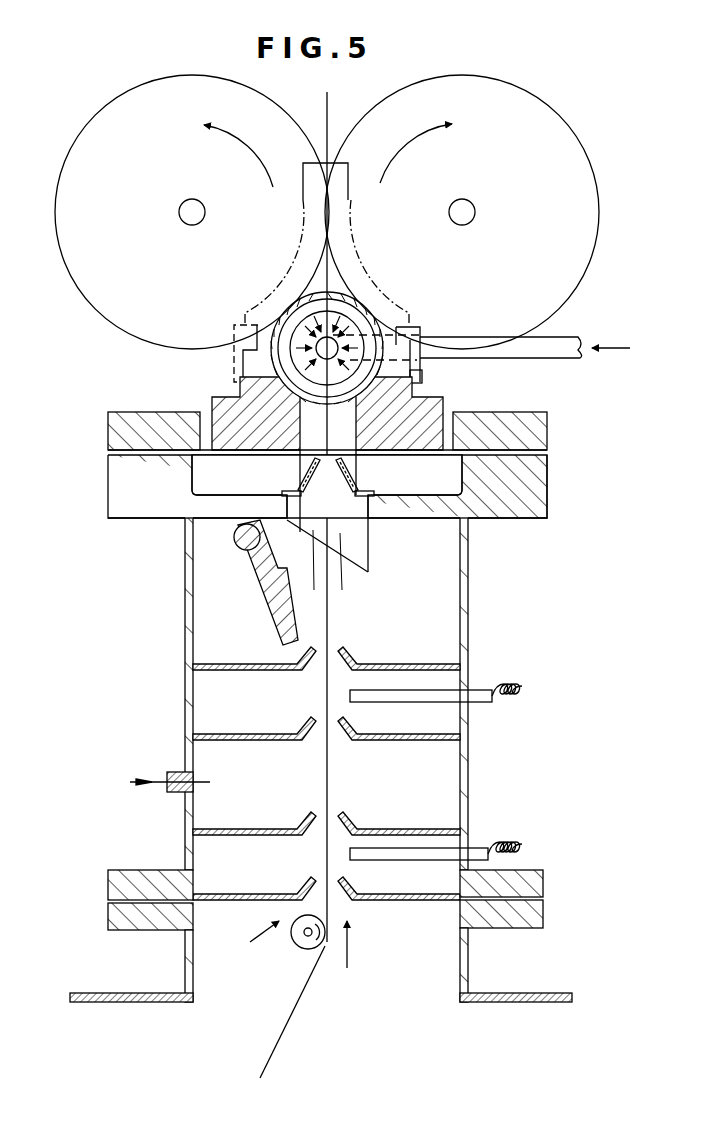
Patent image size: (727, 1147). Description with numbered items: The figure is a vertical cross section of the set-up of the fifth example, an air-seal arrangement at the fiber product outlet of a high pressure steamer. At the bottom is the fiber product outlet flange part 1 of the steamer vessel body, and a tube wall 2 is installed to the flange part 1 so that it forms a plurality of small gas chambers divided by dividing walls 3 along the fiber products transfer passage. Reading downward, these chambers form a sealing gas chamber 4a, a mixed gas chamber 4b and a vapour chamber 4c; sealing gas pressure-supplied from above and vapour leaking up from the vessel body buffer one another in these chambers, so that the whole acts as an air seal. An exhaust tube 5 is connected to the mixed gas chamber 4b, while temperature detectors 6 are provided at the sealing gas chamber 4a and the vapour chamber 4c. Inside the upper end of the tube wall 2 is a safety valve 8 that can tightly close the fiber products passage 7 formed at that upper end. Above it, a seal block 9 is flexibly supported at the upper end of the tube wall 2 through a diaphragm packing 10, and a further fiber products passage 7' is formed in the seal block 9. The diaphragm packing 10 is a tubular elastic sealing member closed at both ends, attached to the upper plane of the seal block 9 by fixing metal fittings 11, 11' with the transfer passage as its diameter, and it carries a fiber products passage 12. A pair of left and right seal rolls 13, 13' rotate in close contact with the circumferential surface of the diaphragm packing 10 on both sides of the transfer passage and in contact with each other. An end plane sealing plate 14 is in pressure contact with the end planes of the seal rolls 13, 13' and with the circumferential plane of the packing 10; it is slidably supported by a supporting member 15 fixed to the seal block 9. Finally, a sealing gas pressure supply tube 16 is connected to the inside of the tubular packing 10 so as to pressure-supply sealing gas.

The fiber product outlet flange part 1 is at (544, 912).
The tube wall 2 is at (469, 554).
The dividing walls 3 is at (255, 742).
The sealing gas chamber 4a is at (212, 700).
The mixed gas chamber 4b is at (212, 752).
The vapour chamber 4c is at (212, 856).
The exhaust tube 5 is at (176, 792).
The temperature detectors 6 is at (492, 688).
The fiber products passage 7 is at (322, 533).
The fiber products passage 7' is at (383, 508).
The safety valve 8 is at (262, 596).
The seal block 9 is at (212, 400).
The diaphragm packing 10 is at (360, 292).
The fixing metal fitting 11 is at (432, 342).
The fixing metal fitting 11' is at (225, 357).
The fiber products passage 12 is at (304, 293).
The seal roll 13 is at (192, 212).
The seal roll 13' is at (486, 212).
The end plane sealing plate 14 is at (346, 145).
The supporting member 15 is at (423, 375).
The sealing gas pressure supply tube 16 is at (545, 359).